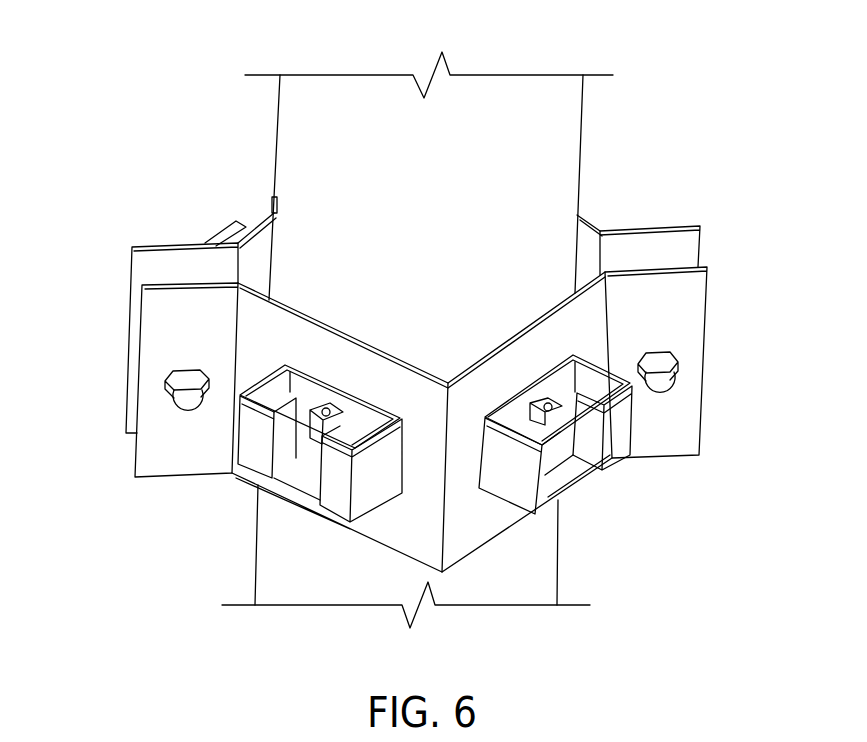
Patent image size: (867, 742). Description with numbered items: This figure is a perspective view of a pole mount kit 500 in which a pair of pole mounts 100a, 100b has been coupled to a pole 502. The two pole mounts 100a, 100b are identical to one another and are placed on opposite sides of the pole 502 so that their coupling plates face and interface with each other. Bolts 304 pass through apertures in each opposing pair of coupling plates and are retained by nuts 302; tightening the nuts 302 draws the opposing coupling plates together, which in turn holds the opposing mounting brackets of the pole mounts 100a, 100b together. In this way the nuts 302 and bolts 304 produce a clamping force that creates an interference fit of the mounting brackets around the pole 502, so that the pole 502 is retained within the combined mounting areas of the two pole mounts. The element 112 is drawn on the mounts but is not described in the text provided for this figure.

The pole mount kit 500 is at (114, 156).
The pole 502 is at (315, 97).
The pole mount 100a is at (646, 186).
The pole mount 100b is at (409, 454).
The clip 112 is at (200, 511).
The nut 302 is at (176, 381).
The bolt 304 is at (185, 401).